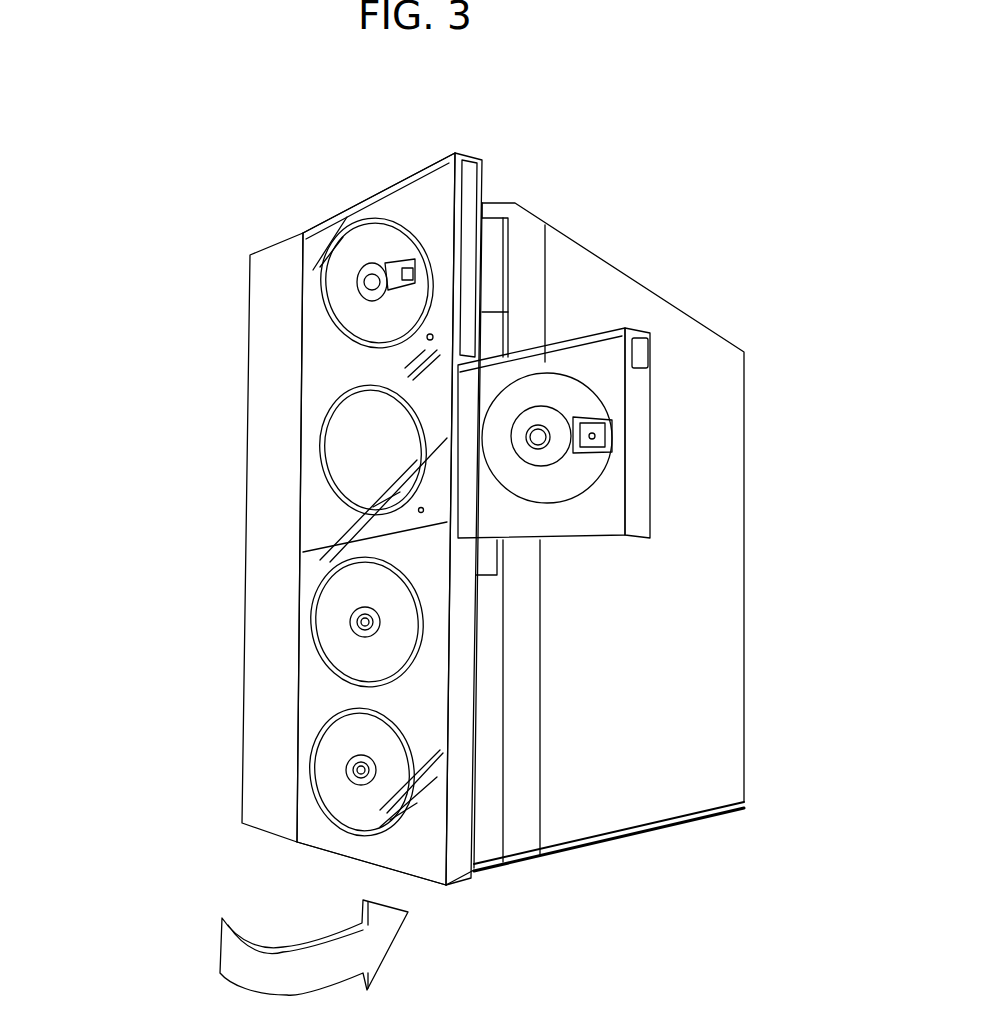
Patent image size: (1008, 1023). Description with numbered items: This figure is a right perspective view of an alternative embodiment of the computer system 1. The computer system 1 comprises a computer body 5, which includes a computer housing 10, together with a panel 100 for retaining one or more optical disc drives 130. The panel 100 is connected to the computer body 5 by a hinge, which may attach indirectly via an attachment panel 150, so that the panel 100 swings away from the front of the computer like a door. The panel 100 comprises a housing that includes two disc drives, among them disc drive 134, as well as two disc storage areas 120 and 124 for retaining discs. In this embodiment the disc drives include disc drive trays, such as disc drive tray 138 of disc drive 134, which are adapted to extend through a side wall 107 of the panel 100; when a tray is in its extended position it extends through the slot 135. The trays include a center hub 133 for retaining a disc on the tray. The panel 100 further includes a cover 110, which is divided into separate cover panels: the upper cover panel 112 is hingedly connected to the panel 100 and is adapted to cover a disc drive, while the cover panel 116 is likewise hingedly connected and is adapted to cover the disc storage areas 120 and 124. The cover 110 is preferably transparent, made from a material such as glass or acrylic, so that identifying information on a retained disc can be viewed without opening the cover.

The computer system 1 is at (802, 625).
The computer body 5 is at (748, 576).
The computer housing 10 is at (744, 474).
The panel 100 is at (297, 843).
The side wall 107 is at (462, 717).
The cover 110 is at (437, 185).
The upper cover panel 112 is at (420, 197).
The cover panel 116 is at (430, 843).
The storage area 120 is at (332, 617).
The storage area 124 is at (325, 768).
The optical disc drive 130 is at (335, 275).
The center hub 133 is at (547, 432).
The disc drive 134 is at (350, 443).
The slot 135 is at (470, 188).
The disc drive tray 138 is at (612, 385).
The attachment panel 150 is at (258, 357).